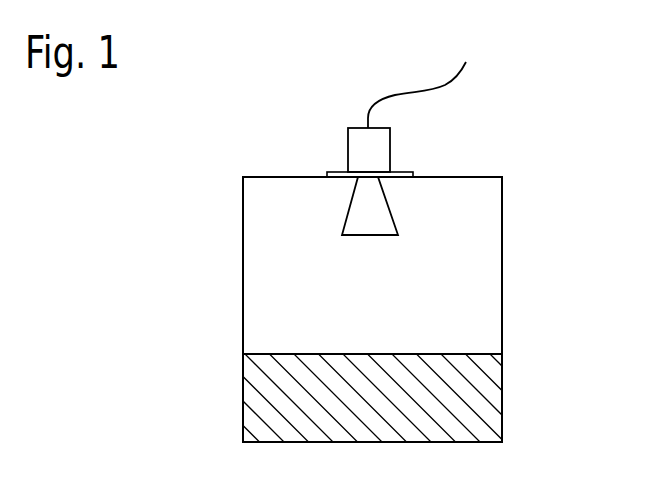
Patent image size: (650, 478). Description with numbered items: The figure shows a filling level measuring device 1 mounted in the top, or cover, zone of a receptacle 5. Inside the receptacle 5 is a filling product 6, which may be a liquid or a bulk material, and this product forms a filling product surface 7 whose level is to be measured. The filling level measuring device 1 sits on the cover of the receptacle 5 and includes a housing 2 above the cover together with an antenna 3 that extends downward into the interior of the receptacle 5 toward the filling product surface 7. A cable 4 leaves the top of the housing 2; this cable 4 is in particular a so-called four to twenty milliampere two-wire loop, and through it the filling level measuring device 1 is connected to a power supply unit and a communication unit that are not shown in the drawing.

The filling level measuring device 1 is at (413, 168).
The housing 2 is at (362, 137).
The antenna 3 is at (357, 217).
The cable 4 is at (408, 92).
The receptacle 5 is at (502, 240).
The filling product 6 is at (470, 413).
The filling product surface 7 is at (473, 352).